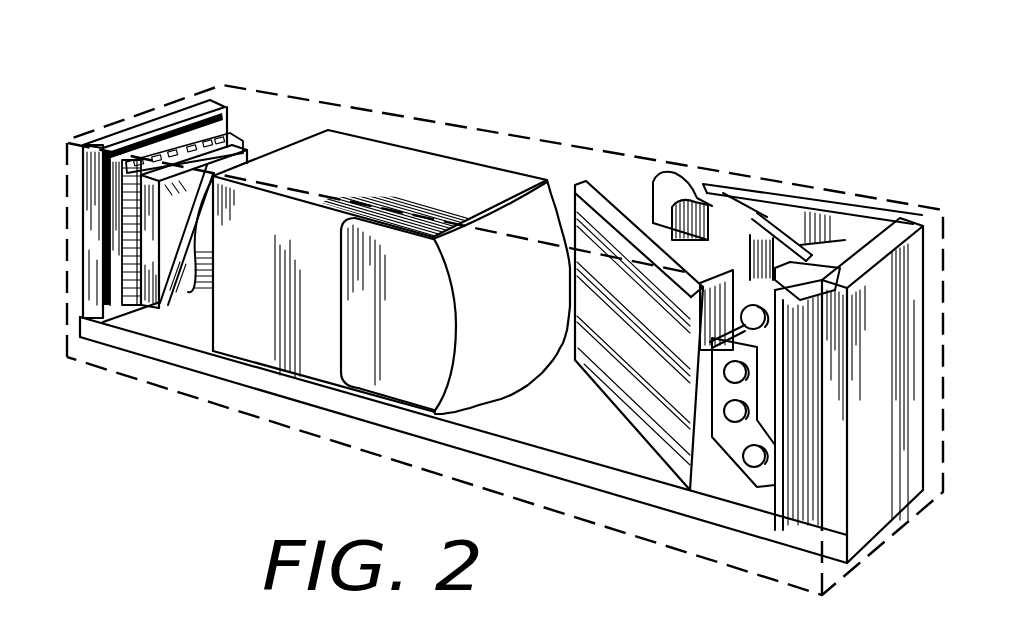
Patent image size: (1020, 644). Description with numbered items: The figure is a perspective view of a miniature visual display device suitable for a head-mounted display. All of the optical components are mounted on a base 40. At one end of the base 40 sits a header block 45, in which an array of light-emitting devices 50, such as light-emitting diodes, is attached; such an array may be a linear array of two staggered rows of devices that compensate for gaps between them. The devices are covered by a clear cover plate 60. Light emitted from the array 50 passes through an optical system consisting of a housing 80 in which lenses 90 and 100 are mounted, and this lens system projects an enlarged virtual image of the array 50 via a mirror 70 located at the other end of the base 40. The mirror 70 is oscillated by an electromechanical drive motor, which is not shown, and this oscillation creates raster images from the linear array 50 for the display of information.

The base 40 is at (273, 377).
The header block 45 is at (88, 165).
The array of light-emitting devices 50 is at (167, 143).
The clear cover plate 60 is at (248, 152).
The mirror 70 is at (610, 373).
The housing 80 is at (362, 150).
The lens 90 is at (190, 292).
The lens 100 is at (488, 294).